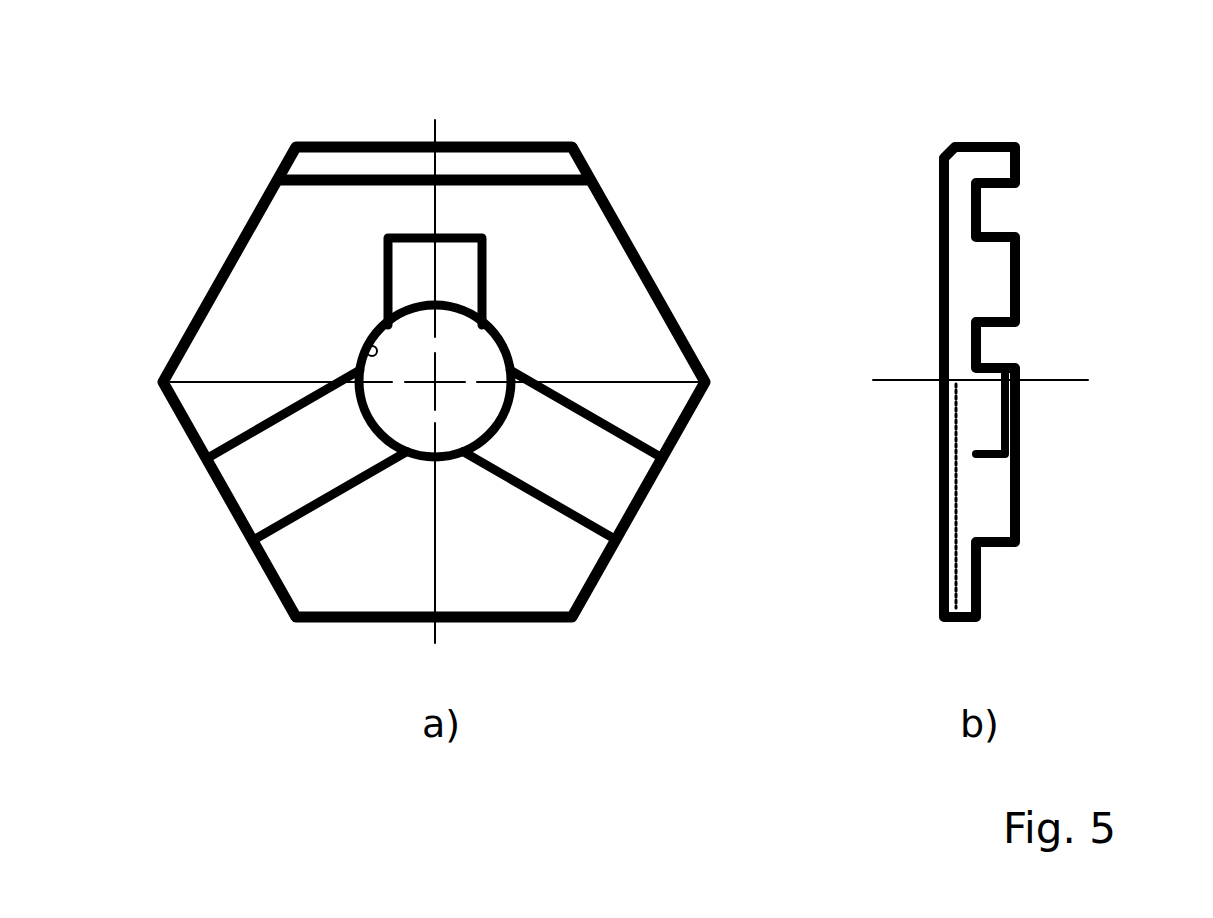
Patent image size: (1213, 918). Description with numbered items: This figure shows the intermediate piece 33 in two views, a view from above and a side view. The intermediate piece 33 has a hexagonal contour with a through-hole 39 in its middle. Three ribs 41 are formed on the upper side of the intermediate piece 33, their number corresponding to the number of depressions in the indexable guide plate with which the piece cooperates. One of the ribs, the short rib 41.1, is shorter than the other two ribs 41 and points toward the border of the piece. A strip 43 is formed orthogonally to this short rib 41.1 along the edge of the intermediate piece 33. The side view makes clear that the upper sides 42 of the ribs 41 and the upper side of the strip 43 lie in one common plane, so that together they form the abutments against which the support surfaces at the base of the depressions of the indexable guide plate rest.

The intermediate piece 33 is at (680, 154).
The through-hole 39 is at (356, 358).
The ribs 41 is at (287, 467).
The short rib 41.1 is at (460, 268).
The upper sides of the ribs 42 is at (1018, 308).
The strip 43 is at (357, 166).